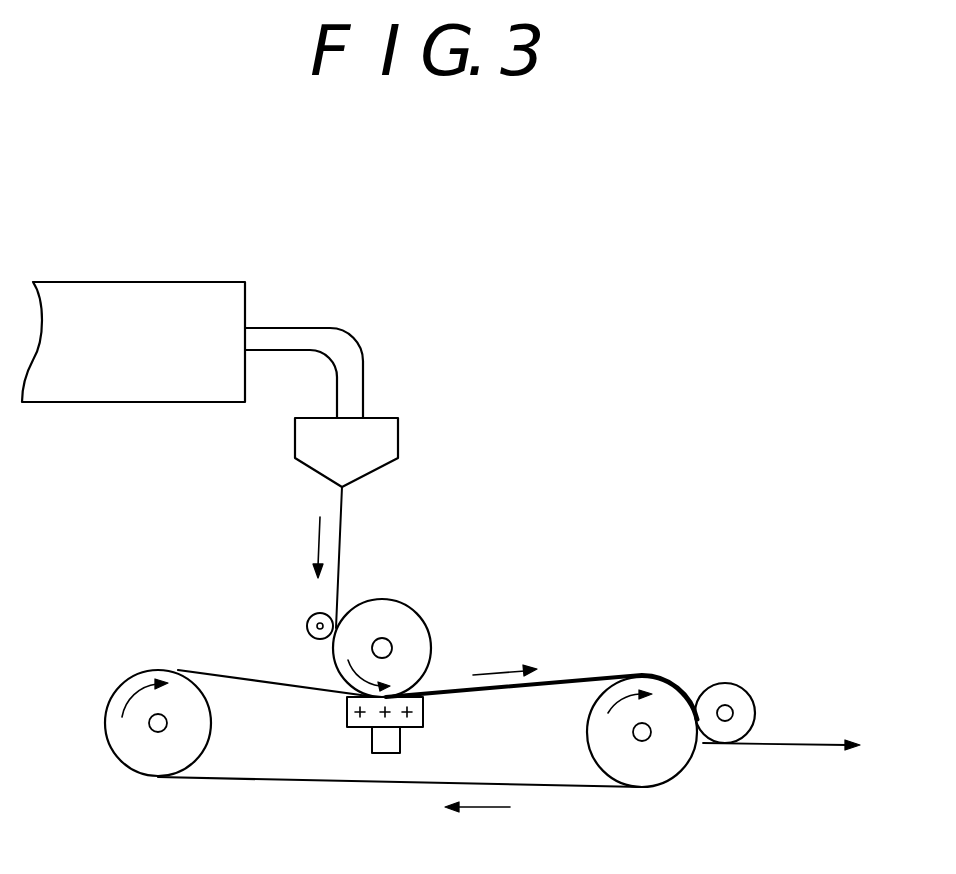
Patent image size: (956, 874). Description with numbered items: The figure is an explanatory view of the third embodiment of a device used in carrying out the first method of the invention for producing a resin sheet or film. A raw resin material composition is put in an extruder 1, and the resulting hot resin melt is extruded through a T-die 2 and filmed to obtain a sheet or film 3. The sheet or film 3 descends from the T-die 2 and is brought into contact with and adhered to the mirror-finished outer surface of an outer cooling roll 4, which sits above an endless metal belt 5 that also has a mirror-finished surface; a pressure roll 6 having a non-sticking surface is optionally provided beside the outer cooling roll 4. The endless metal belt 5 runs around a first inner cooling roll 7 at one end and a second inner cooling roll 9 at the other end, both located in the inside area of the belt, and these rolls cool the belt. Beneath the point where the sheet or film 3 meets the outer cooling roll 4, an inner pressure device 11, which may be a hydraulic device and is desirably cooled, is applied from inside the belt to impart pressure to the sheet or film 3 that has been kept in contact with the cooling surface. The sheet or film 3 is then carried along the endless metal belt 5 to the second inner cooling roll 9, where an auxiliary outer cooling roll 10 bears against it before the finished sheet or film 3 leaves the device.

The extruder 1 is at (183, 281).
The T-die 2 is at (398, 440).
The sheet or film 3 is at (339, 557).
The outer cooling roll 4 is at (430, 627).
The endless metal belt 5 is at (280, 779).
The pressure roll 6 is at (308, 619).
The first inner cooling roll 7 is at (107, 745).
The second inner cooling roll 9 is at (657, 690).
The auxiliary outer cooling roll 10 is at (745, 682).
The inner pressure device 11 is at (423, 727).